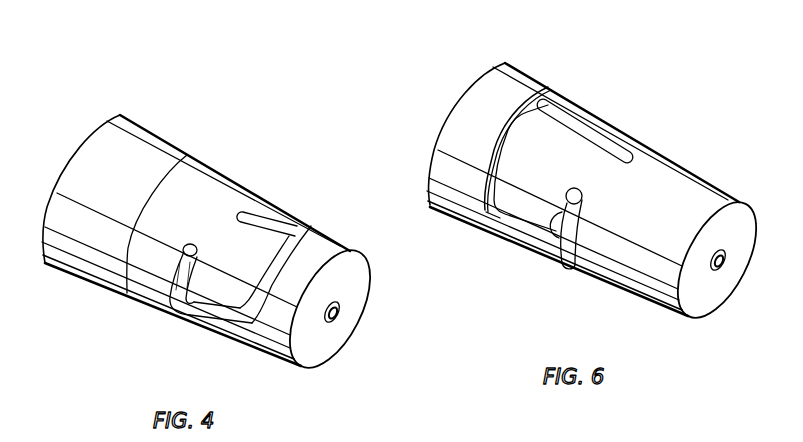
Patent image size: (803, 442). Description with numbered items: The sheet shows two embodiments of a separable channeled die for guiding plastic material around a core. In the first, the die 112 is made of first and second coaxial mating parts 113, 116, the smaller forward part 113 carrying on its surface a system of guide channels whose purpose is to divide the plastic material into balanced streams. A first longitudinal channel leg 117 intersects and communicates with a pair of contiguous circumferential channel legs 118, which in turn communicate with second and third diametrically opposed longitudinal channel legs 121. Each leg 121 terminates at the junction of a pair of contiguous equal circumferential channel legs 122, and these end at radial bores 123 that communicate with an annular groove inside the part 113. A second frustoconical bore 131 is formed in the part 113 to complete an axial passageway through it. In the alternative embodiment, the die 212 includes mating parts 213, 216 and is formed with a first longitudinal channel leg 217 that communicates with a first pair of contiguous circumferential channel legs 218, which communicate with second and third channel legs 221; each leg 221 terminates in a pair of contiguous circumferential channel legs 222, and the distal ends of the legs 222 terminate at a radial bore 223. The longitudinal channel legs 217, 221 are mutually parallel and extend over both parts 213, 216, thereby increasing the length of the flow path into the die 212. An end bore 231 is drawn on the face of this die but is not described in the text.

In FIG. 4, the die 112 is at (226, 242).
In FIG. 4, the first coaxial mating part 113 is at (212, 173).
In FIG. 4, the second coaxial mating part 116 is at (162, 147).
In FIG. 4, the first longitudinal channel leg 117 is at (247, 216).
In FIG. 4, the circumferential channel leg 118 is at (304, 227).
In FIG. 4, the longitudinal channel leg 121 is at (216, 316).
In FIG. 4, the circumferential channel leg 122 is at (184, 320).
In FIG. 4, the radial bore 123 is at (192, 242).
In FIG. 4, the second frustoconical bore 131 is at (342, 314).
In FIG. 6, the die 212 is at (585, 172).
In FIG. 6, the mating part 213 is at (723, 197).
In FIG. 6, the mating part 216 is at (525, 77).
In FIG. 6, the first longitudinal channel leg 217 is at (614, 150).
In FIG. 6, the circumferential channel leg 218 is at (548, 90).
In FIG. 6, the channel leg 221 is at (492, 223).
In FIG. 6, the circumferential channel leg 222 is at (542, 251).
In FIG. 6, the radial bore 223 is at (584, 193).
In FIG. 6, the bore 231 is at (722, 268).